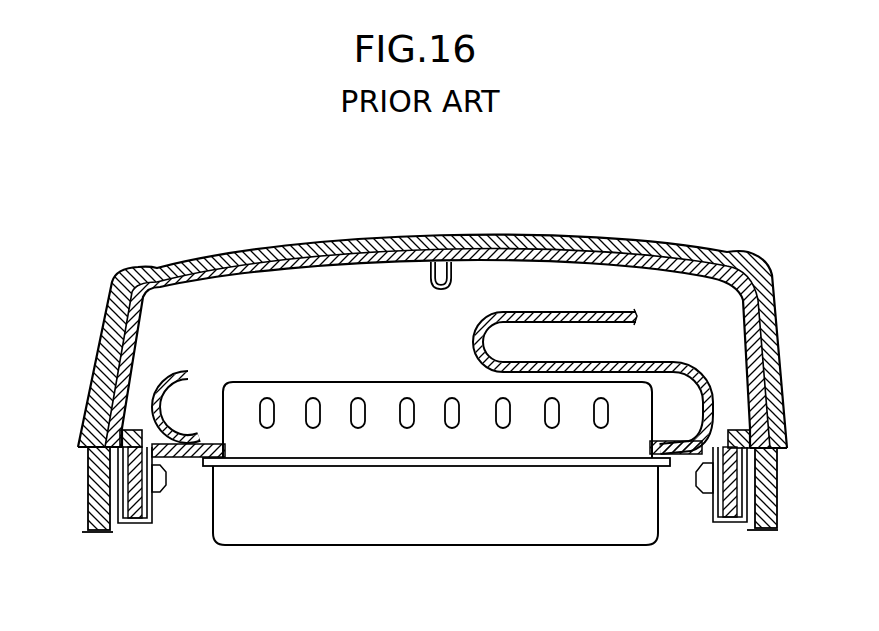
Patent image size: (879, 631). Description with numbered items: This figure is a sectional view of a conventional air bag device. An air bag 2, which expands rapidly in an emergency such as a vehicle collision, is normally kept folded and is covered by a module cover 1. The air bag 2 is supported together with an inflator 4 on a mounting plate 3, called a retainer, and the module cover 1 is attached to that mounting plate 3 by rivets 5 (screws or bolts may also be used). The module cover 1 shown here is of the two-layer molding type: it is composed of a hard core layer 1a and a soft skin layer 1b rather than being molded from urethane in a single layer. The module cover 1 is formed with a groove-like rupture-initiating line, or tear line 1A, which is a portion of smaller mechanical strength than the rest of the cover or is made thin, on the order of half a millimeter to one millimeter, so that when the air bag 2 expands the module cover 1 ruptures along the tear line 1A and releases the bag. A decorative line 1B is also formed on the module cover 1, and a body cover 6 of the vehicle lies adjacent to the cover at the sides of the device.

The module cover 1 is at (437, 314).
The tear line 1A is at (443, 240).
The decorative line 1B is at (157, 267).
The core layer 1a is at (257, 278).
The skin layer 1b is at (300, 246).
The air bag 2 is at (480, 333).
The mounting plate 3 is at (178, 457).
The inflator 4 is at (448, 547).
The rivet 5 is at (157, 492).
The body cover 6 is at (88, 497).